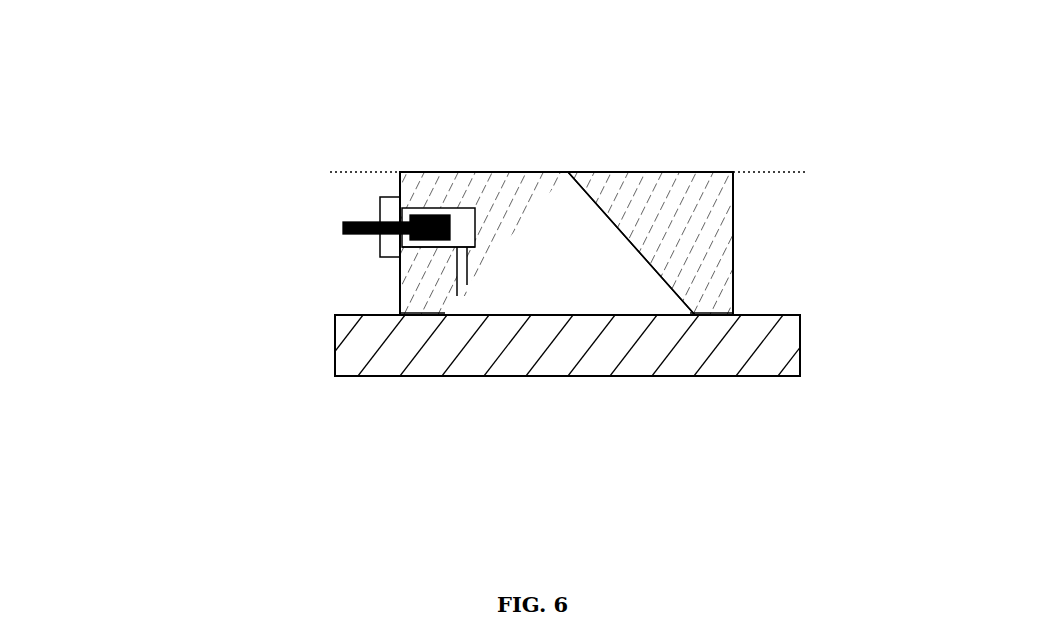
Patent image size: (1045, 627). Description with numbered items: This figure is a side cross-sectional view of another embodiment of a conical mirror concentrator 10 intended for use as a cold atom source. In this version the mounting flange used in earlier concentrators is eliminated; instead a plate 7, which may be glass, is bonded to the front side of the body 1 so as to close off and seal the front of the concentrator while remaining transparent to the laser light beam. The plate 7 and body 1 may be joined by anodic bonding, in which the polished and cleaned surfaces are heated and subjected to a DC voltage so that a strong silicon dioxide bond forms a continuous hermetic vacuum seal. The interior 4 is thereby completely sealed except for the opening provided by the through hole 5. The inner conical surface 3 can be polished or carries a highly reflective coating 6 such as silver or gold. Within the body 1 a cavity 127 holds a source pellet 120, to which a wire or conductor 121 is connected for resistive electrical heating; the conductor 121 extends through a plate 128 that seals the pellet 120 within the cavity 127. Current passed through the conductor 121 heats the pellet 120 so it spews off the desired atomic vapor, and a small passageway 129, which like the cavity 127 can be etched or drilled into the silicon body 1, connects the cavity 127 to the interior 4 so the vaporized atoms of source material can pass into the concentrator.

The conical mirror concentrator 10 is at (106, 88).
The body 1 is at (700, 194).
The through hole 5 is at (581, 164).
The inner conical surface 3 is at (567, 243).
The highly reflective coating 6 is at (528, 254).
The interior 4 is at (710, 336).
The plate 7 is at (461, 380).
The source pellet 120 is at (396, 211).
The wire or conductor 121 is at (335, 226).
The cavity 127 is at (457, 198).
The plate 128 is at (371, 248).
The passageway 129 is at (466, 297).